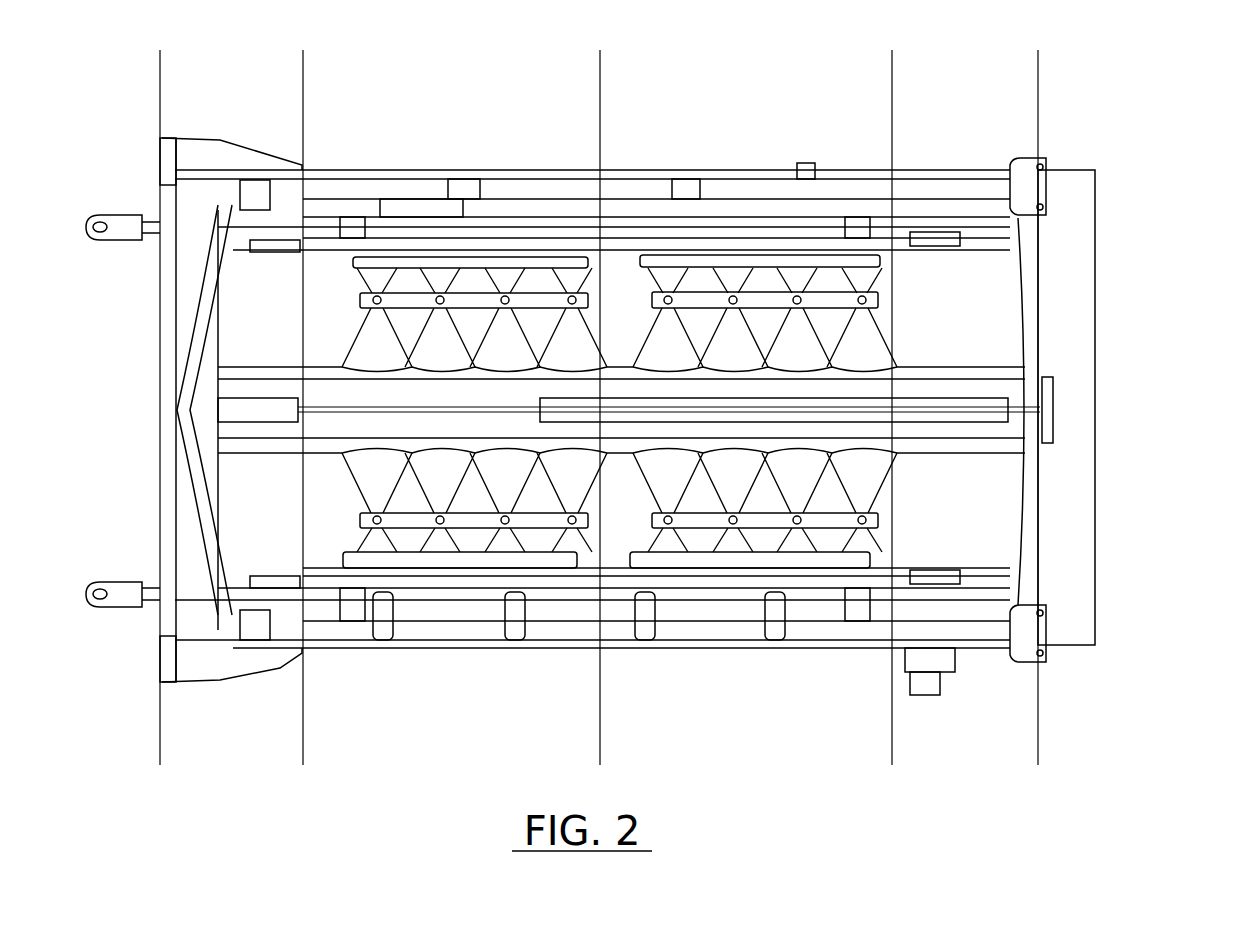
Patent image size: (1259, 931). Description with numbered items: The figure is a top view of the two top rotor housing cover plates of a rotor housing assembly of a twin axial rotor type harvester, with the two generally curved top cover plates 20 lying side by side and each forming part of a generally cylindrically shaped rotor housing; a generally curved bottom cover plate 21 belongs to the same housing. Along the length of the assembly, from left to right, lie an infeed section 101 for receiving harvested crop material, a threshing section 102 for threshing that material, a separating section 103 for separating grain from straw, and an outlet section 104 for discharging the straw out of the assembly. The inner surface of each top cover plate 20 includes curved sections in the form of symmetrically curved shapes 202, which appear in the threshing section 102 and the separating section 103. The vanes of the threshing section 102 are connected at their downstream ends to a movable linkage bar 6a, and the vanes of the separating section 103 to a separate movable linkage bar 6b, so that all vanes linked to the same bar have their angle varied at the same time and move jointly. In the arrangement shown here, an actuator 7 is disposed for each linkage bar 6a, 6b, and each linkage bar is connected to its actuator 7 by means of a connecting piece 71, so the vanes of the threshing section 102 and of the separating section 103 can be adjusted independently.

The infeed section 101 is at (160, 85).
The threshing section 102 is at (600, 85).
The separating section 103 is at (600, 85).
The outlet section 104 is at (892, 85).
The actuator 7 is at (352, 227).
The linkage bar 6a is at (408, 253).
The linkage bar 6b is at (818, 230).
The connecting piece 71 is at (462, 290).
The symmetrically curved shape 202 is at (522, 355).
The top cover plate 20 is at (1010, 330).
The bottom cover plate 21 is at (1055, 387).